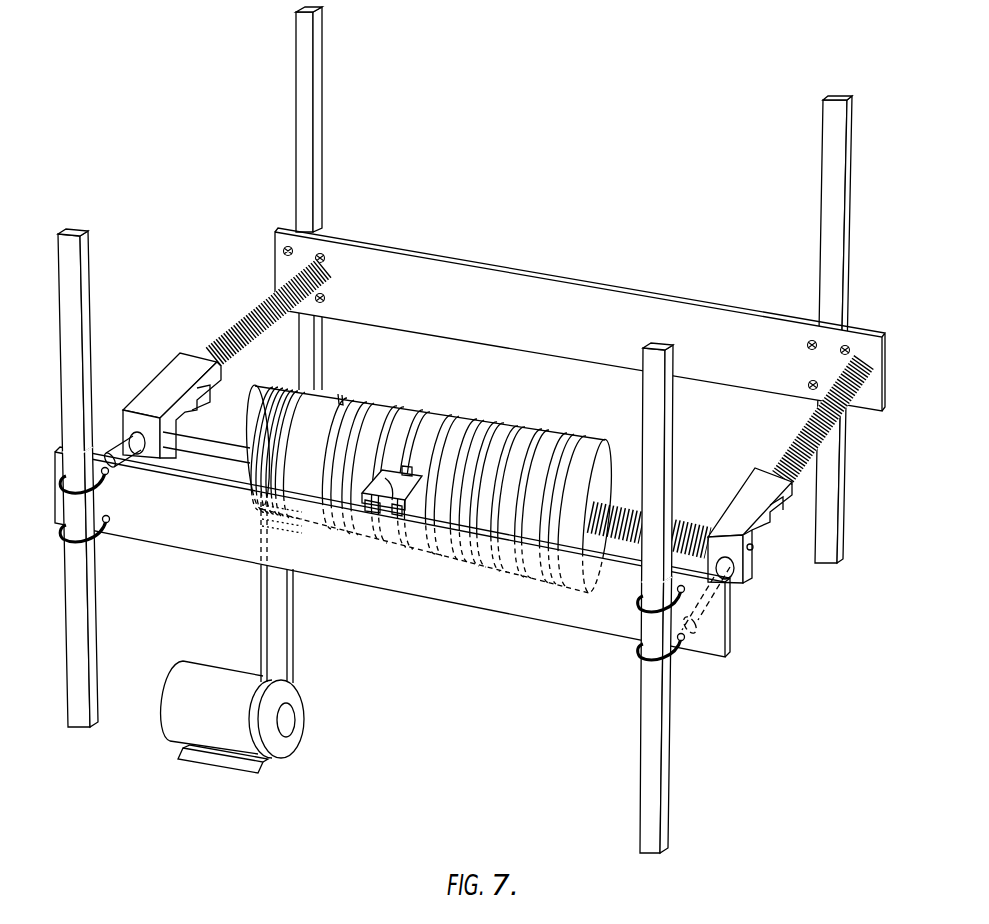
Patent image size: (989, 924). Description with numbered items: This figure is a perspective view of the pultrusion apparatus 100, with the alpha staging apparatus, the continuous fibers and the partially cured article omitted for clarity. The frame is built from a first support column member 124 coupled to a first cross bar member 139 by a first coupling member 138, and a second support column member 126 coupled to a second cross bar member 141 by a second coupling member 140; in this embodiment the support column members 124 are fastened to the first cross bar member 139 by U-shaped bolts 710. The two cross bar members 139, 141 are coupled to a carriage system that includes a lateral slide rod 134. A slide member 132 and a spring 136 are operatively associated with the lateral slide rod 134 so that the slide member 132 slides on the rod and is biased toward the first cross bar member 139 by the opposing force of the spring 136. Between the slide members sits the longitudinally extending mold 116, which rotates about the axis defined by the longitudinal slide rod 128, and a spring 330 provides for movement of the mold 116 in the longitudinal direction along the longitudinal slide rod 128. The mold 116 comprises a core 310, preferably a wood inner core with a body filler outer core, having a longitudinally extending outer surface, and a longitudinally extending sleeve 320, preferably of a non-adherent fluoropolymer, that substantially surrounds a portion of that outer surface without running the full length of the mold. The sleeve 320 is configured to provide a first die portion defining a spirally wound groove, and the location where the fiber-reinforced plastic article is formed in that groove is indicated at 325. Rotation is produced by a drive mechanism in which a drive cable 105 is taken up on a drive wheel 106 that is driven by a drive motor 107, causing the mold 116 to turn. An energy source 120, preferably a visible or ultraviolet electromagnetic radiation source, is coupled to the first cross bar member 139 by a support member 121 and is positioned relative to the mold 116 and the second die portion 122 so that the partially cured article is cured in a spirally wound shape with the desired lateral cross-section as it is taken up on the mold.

The pultrusion apparatus 100 is at (203, 124).
The drive cable 105 is at (292, 640).
The drive wheel 106 is at (300, 707).
The drive motor 107 is at (213, 677).
The mold 116 is at (548, 411).
The energy source 120 is at (407, 498).
The support member 121 is at (402, 508).
The second die portion 122 is at (398, 483).
The first support column member 124 is at (68, 230).
The second support column member 126 is at (308, 7).
The longitudinal slide rod 128 is at (197, 436).
The slide member 132 is at (165, 380).
The lateral slide rod 134 is at (118, 457).
The spring 136 is at (243, 312).
The first coupling member 138 is at (62, 272).
The first cross bar member 139 is at (713, 642).
The second coupling member 140 is at (318, 118).
The second cross bar member 141 is at (772, 336).
The core 310 is at (330, 388).
The sleeve 320 is at (446, 402).
The fiber-reinforced plastic article formed in first die portion 325 is at (427, 406).
The spring 330 is at (695, 523).
The U-shaped bolts 710 is at (668, 660).